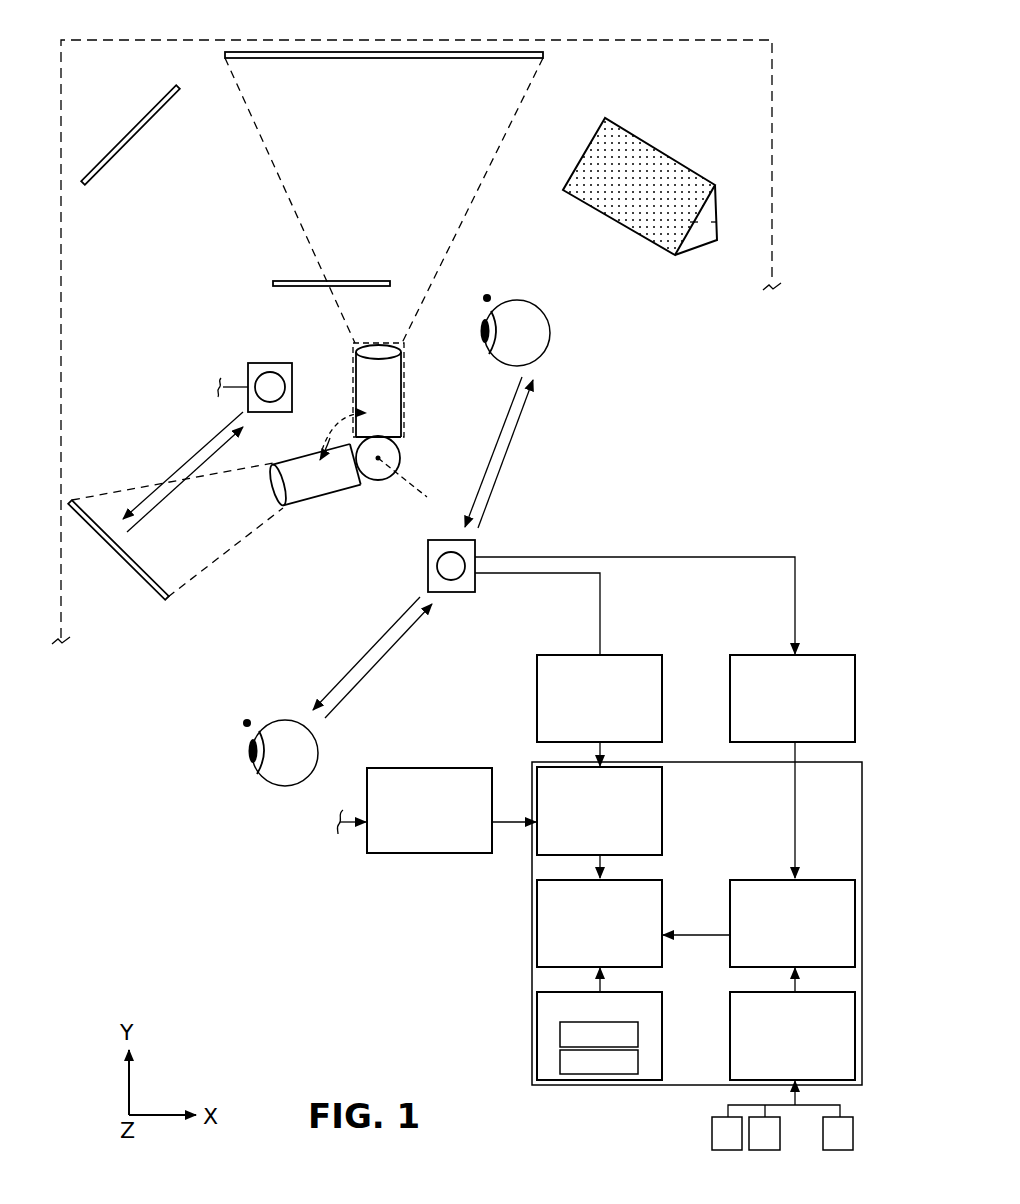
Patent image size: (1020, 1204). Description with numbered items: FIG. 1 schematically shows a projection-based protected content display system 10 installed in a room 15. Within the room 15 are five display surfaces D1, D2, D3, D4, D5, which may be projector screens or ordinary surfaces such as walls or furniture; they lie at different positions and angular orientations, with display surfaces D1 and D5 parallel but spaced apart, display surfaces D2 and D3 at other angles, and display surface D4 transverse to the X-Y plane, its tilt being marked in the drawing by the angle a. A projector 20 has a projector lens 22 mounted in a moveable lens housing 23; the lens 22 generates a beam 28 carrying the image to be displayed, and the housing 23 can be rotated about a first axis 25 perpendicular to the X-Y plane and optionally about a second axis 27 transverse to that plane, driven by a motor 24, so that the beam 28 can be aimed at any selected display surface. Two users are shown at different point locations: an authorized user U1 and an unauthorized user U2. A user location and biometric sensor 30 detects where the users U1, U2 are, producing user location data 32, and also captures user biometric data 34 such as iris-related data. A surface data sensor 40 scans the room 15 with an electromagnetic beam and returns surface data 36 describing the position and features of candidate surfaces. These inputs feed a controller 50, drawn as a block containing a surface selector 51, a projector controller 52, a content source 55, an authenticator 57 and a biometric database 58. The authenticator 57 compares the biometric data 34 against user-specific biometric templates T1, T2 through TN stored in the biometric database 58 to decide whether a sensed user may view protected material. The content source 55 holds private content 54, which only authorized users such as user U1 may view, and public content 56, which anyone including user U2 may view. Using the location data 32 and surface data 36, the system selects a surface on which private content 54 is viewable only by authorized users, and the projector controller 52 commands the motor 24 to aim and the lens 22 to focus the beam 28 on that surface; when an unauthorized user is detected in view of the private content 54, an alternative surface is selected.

The protected content display system 10 is at (502, 30).
The room 15 is at (600, 42).
The projector 20 is at (349, 443).
The projector lens 22 is at (275, 482).
The moveable lens housing 23 is at (288, 457).
The motor 24 is at (393, 428).
The first axis 25 is at (381, 457).
The second axis 27 is at (403, 474).
The beam 28 is at (217, 562).
The user location and biometric sensor 30 is at (428, 564).
The user location data 32 is at (537, 681).
The user biometric data 34 is at (730, 681).
The surface data 36 is at (428, 768).
The surface data sensor 40 is at (270, 363).
The controller 50 is at (532, 980).
The surface selector 51 is at (664, 789).
The projector controller 52 is at (537, 904).
The private content 54 is at (560, 1034).
The content source 55 is at (537, 1006).
The public content 56 is at (560, 1060).
The authenticator 57 is at (730, 904).
The biometric database 58 is at (730, 1014).
The display surface D1 is at (370, 58).
The display surface D2 is at (150, 587).
The display surface D3 is at (128, 146).
The display surface D4 is at (640, 195).
The display surface D5 is at (276, 281).
The surface angle a is at (703, 224).
The authorized user U1 is at (547, 347).
The unauthorized user U2 is at (285, 786).
The biometric template T1 is at (776, 1115).
The biometric template T2 is at (778, 1133).
The biometric template TN is at (838, 1133).